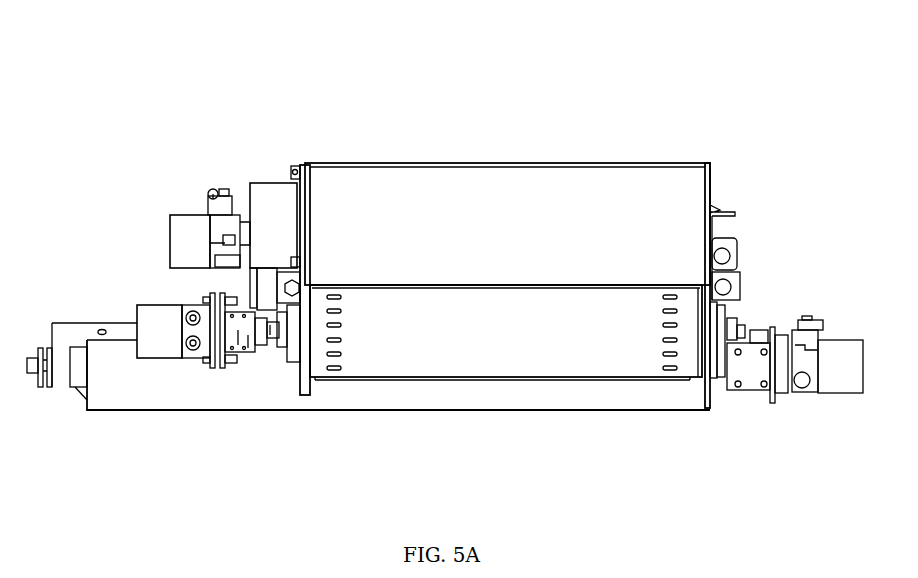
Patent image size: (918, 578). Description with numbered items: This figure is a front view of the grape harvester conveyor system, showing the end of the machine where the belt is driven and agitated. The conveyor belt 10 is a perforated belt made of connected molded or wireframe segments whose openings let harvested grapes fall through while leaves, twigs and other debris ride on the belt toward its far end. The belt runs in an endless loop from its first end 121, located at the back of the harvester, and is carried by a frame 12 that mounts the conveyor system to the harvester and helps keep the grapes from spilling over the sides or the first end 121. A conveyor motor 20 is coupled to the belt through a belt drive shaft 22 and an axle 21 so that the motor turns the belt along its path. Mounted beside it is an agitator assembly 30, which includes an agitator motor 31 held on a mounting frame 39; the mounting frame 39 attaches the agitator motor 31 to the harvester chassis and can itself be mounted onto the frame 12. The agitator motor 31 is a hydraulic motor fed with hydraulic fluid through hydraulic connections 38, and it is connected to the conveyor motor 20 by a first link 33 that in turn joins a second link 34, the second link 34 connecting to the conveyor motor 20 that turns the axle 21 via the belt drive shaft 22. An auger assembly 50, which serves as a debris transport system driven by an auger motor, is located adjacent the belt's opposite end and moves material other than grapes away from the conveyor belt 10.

The conveyor belt 10 is at (507, 302).
The frame 12 is at (497, 182).
The first end 121 is at (527, 337).
The conveyor motor 20 is at (145, 317).
The axle 21 is at (273, 345).
The belt drive shaft 22 is at (262, 347).
The agitator assembly 30 is at (240, 115).
The agitator motor 31 is at (168, 251).
The first link 33 is at (260, 287).
The second link 34 is at (222, 370).
The hydraulic connections 38 is at (213, 185).
The mounting frame 39 is at (267, 190).
The auger assembly 50 is at (677, 400).